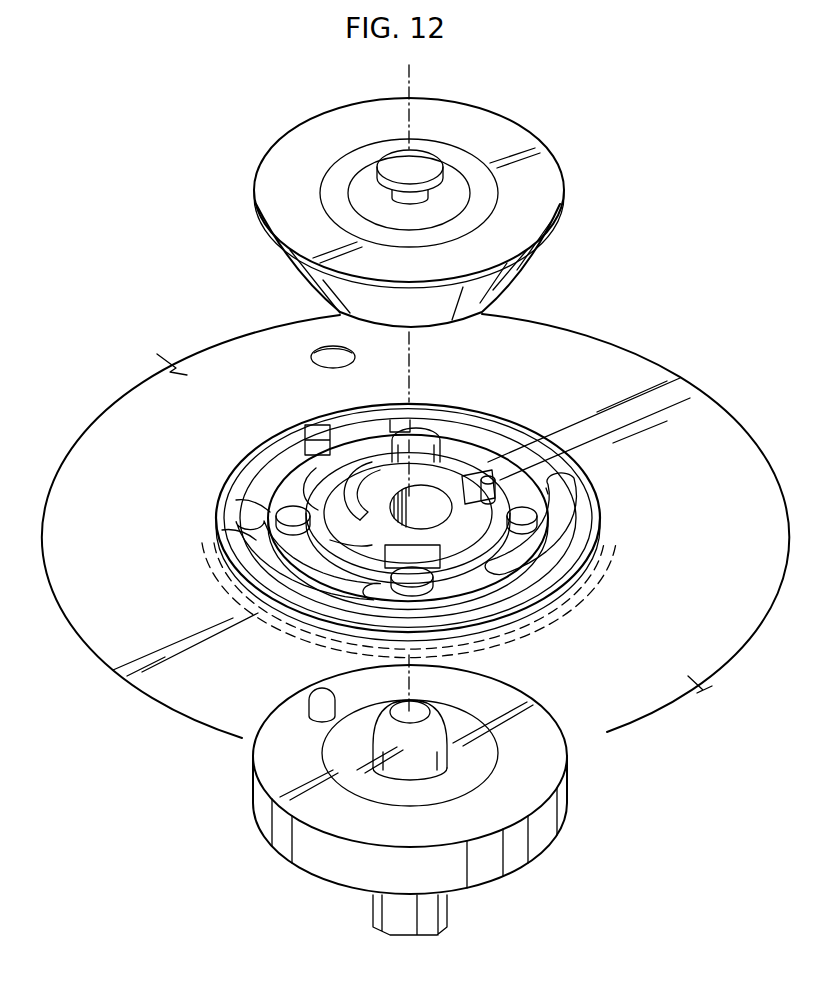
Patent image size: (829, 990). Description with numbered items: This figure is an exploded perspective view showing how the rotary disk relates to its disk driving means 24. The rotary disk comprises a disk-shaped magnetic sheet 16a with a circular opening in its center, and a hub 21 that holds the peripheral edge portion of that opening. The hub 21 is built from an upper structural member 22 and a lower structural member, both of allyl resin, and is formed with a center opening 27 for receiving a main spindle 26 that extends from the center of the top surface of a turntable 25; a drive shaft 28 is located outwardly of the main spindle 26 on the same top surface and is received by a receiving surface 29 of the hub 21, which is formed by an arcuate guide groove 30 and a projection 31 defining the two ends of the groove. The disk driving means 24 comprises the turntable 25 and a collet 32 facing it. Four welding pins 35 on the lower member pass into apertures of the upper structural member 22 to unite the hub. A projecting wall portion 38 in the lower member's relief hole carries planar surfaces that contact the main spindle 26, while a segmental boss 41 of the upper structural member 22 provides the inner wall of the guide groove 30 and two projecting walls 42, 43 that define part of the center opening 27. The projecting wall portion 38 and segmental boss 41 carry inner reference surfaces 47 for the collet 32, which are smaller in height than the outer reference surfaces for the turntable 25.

The magnetic sheet 16a is at (678, 390).
The hub 21 is at (404, 520).
The upper structural member 22 is at (394, 531).
The disk driving means 24 is at (388, 800).
The turntable 25 is at (268, 752).
The main spindle 26 is at (444, 752).
The center opening 27 is at (450, 474).
The drive shaft 28 is at (318, 714).
The receiving surface 29 is at (318, 468).
The arcuate guide groove 30 is at (362, 486).
The projection 31 is at (320, 492).
The collet 32 is at (555, 178).
The welding pins 35 is at (240, 506).
The projecting wall portion 38 is at (493, 488).
The segmental boss 41 is at (343, 545).
The projecting wall 42 is at (326, 472).
The projecting wall 43 is at (478, 578).
The inner reference surfaces 47 is at (489, 478).